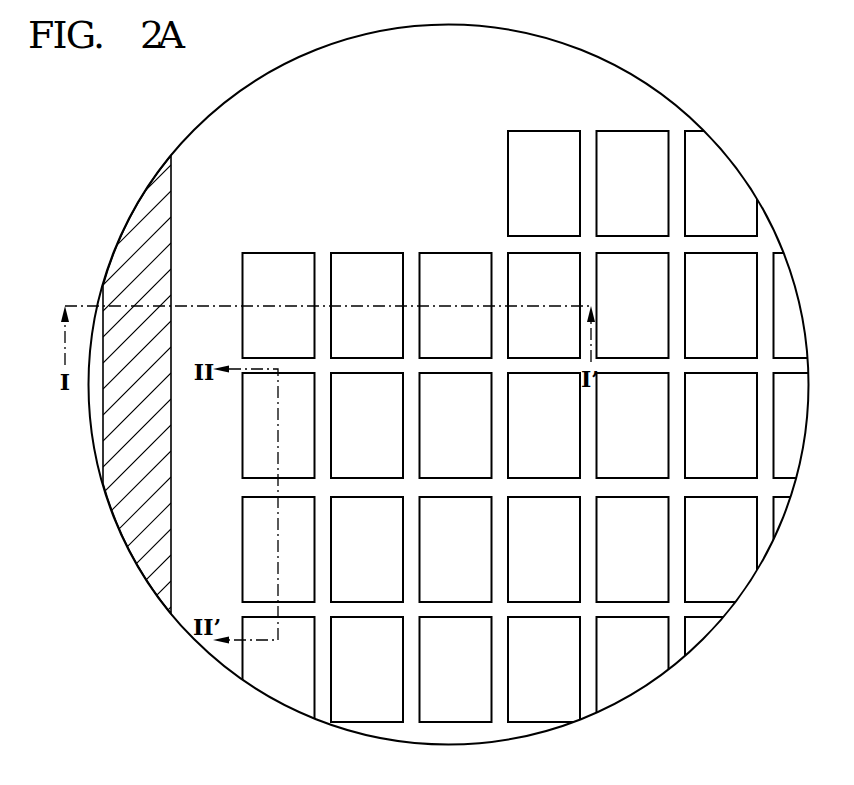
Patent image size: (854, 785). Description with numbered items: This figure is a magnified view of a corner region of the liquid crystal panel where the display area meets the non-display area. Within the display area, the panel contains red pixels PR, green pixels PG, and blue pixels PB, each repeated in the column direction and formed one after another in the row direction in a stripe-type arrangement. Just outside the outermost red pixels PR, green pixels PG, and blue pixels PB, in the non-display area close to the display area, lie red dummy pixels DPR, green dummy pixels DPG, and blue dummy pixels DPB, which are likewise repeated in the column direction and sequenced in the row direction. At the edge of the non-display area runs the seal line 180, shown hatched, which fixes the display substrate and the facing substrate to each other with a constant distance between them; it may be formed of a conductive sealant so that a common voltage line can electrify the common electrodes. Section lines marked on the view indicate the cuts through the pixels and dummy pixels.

The seal line 180 is at (132, 523).
The red dummy pixels DPR is at (412, 426).
The green dummy pixels DPG is at (500, 426).
The blue dummy pixels DPB is at (589, 426).
The red pixels PR is at (544, 487).
The green pixels PG is at (633, 487).
The blue pixels PB is at (721, 487).